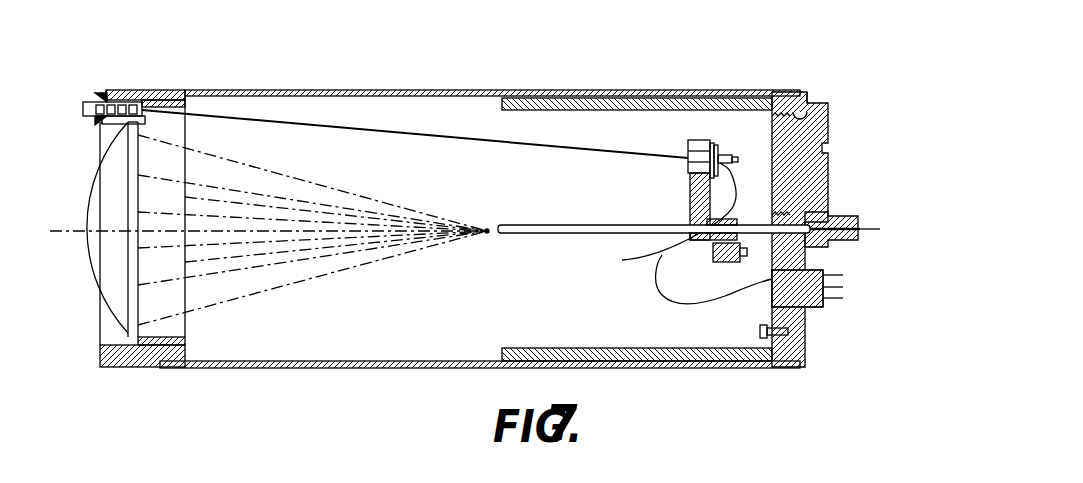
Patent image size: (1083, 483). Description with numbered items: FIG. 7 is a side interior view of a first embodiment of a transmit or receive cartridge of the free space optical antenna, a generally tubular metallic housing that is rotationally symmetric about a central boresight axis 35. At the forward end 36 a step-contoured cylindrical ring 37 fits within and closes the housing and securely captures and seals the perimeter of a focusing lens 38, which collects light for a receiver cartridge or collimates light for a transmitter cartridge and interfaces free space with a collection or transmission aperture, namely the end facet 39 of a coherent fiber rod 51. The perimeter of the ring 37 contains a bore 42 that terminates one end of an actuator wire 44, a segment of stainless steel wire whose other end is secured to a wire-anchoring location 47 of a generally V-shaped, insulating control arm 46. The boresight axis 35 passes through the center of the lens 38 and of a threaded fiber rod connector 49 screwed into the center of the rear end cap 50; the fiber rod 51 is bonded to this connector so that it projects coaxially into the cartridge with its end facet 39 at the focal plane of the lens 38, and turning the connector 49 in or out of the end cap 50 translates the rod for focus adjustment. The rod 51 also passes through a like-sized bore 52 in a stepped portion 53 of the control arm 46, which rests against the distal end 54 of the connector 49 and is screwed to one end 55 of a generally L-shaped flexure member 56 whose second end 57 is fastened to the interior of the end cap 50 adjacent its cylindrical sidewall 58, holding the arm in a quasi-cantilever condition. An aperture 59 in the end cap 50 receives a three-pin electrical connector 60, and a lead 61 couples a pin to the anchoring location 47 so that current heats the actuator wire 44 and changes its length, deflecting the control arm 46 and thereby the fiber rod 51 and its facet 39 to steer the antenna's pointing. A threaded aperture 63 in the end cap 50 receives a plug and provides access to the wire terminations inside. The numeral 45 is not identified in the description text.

The boresight axis 35 is at (68, 233).
The forward end 36 is at (123, 80).
The cylindrical ring 37 is at (145, 368).
The focusing lens 38 is at (88, 205).
The end facet 39 is at (487, 225).
The bore 42 is at (107, 125).
The actuator wire 44 is at (450, 133).
The threaded ring 45 is at (143, 110).
The control arm 46 is at (688, 178).
The wire-anchoring location 47 is at (688, 150).
The fiber rod connector 49 is at (833, 210).
The rear end cap 50 is at (807, 355).
The coherent fiber rod 51 is at (606, 222).
The bore 52 is at (707, 240).
The stepped portion 53 is at (743, 225).
The distal end 54 is at (740, 223).
The first end of flexure member 55 is at (733, 263).
The L-shaped flexure member 56 is at (766, 289).
The second end of flexure member 57 is at (760, 323).
The cylindrical sidewall 58 is at (530, 350).
The aperture 59 is at (808, 318).
The multipin electrical connector 60 is at (810, 305).
The lead 61 is at (835, 67).
The threaded aperture 63 is at (828, 118).